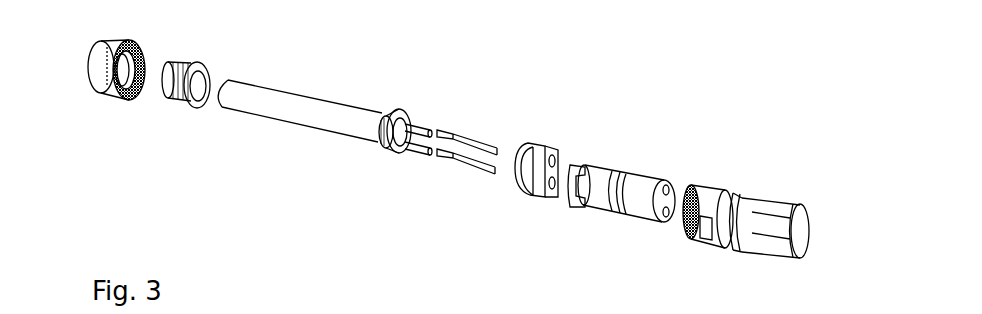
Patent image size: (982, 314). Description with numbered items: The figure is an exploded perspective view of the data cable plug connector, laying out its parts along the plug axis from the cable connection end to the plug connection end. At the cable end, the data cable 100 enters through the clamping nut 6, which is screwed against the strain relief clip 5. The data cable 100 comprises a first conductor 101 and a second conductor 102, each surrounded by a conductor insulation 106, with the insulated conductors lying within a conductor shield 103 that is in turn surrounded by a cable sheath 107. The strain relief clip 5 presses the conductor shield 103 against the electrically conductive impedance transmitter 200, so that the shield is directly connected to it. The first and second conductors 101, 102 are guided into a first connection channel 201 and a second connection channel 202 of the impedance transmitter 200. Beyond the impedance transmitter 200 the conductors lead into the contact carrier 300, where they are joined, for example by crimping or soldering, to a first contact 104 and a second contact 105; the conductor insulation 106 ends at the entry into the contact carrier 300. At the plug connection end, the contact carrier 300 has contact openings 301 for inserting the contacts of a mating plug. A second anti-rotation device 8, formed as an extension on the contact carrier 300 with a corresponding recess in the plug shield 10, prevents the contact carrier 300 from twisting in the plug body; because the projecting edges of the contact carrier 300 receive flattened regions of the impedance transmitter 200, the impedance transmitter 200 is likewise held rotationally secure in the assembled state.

The strain relief clip 5 is at (187, 65).
The clamping nut 6 is at (107, 88).
The second anti-rotation device 8 is at (593, 165).
The plug shield 10 is at (730, 200).
The data cable 100 is at (263, 68).
The first conductor 101 is at (423, 130).
The second conductor 102 is at (423, 152).
The conductor shield 103 is at (400, 113).
The first contact 104 is at (468, 138).
The second contact 105 is at (467, 167).
The conductor insulation 106 is at (405, 147).
The cable sheath 107 is at (298, 110).
The impedance transmitter 200 is at (540, 152).
The first connection channel 201 is at (554, 155).
The second connection channel 202 is at (549, 195).
The contact carrier 300 is at (628, 167).
The contact opening 301 is at (664, 186).